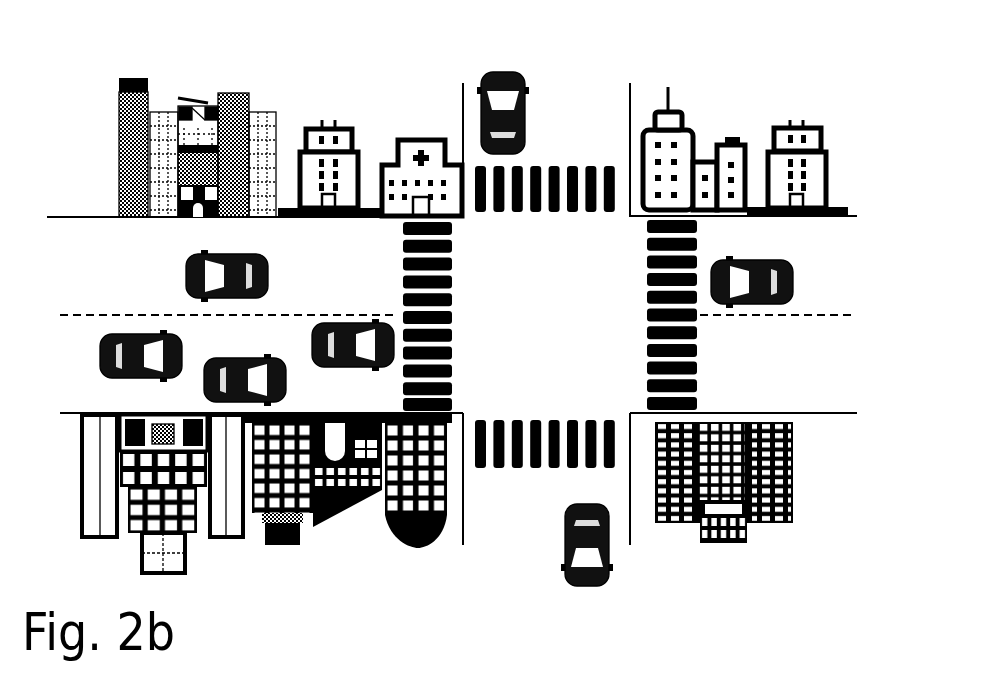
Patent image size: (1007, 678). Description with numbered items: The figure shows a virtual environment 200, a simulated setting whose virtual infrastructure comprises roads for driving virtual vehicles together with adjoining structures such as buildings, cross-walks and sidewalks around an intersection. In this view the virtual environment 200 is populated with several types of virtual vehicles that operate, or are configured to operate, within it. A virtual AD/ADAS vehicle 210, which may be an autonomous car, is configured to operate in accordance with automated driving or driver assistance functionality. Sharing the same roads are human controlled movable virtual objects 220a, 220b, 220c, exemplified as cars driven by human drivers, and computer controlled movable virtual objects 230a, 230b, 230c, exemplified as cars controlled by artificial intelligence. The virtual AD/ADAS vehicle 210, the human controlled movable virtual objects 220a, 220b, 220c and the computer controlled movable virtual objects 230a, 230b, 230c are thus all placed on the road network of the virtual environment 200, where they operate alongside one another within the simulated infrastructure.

The virtual environment 200 is at (803, 29).
The virtual AD/ADAS vehicle 210 is at (101, 356).
The human controlled movable virtual object 220a is at (362, 366).
The human controlled movable virtual object 220b is at (268, 271).
The human controlled movable virtual object 220c is at (522, 135).
The computer controlled movable virtual object 230a is at (207, 362).
The computer controlled movable virtual object 230b is at (793, 269).
The computer controlled movable virtual object 230c is at (569, 521).